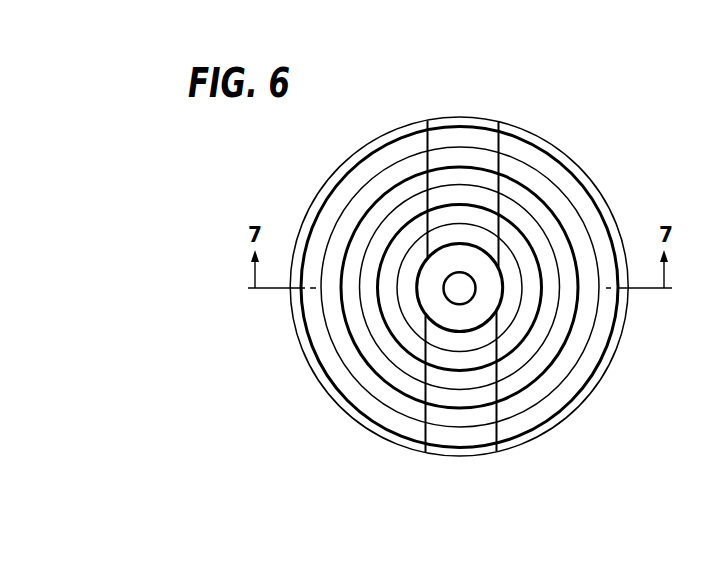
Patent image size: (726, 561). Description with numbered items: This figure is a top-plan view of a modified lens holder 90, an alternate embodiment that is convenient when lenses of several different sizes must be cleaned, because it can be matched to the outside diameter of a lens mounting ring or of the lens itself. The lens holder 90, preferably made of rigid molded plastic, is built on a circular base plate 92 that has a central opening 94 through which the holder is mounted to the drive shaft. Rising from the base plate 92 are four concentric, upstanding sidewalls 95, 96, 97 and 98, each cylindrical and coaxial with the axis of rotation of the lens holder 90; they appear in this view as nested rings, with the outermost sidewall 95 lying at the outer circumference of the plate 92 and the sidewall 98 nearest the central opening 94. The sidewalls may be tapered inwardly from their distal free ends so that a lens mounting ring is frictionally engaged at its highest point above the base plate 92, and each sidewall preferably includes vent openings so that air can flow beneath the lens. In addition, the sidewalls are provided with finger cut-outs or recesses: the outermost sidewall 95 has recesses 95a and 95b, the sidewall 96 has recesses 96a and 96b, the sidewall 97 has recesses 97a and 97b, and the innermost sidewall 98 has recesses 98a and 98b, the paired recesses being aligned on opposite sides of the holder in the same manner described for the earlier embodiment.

The modified lens holder 90 is at (448, 66).
The circular base plate 92 is at (498, 301).
The central opening 94 is at (443, 287).
The outermost sidewall 95 is at (343, 411).
The finger cut-out 95a is at (463, 456).
The finger cut-out 95b is at (470, 117).
The sidewall 96 is at (333, 353).
The finger cut-out 96a is at (481, 422).
The finger cut-out 96b is at (483, 155).
The sidewall 97 is at (361, 267).
The finger cut-out 97a is at (435, 380).
The finger cut-out 97b is at (448, 191).
The sidewall 98 is at (456, 245).
The finger cut-out 98a is at (470, 343).
The finger cut-out 98b is at (487, 235).